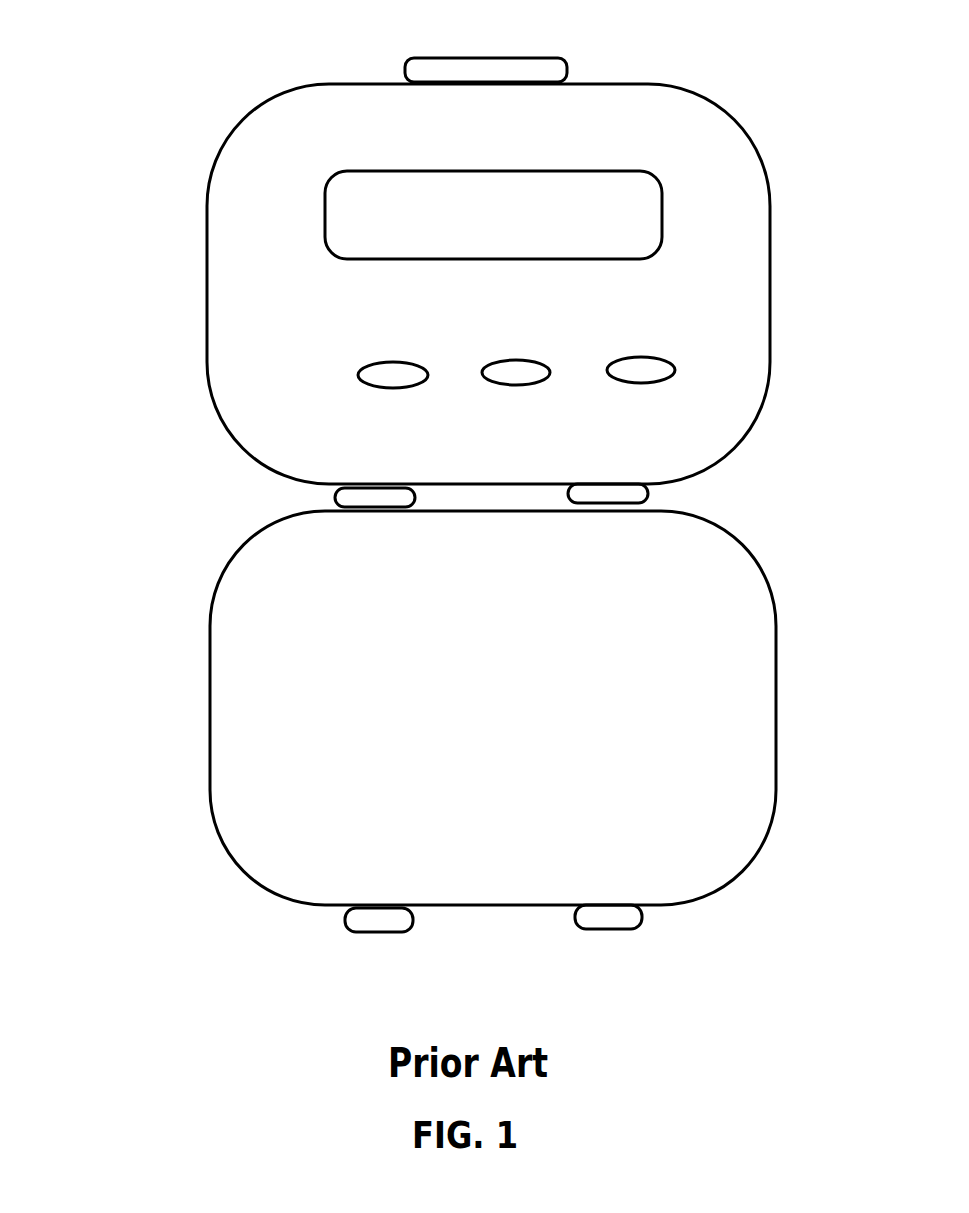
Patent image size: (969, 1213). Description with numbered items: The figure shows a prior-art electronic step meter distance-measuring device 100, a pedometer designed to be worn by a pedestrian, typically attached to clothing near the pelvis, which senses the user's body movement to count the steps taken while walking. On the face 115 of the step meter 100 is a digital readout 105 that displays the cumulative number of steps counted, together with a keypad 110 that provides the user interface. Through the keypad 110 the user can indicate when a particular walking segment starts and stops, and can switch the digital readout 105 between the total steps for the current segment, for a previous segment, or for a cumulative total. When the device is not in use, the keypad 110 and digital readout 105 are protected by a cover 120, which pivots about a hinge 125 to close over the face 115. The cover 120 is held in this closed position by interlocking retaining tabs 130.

The electronic step meter distance-measuring device 100 is at (105, 431).
The digital readout 105 is at (645, 221).
The keypad 110 is at (676, 369).
The face 115 is at (718, 283).
The cover 120 is at (775, 618).
The hinge 125 is at (648, 495).
The interlocking retaining tabs 130 is at (562, 57).